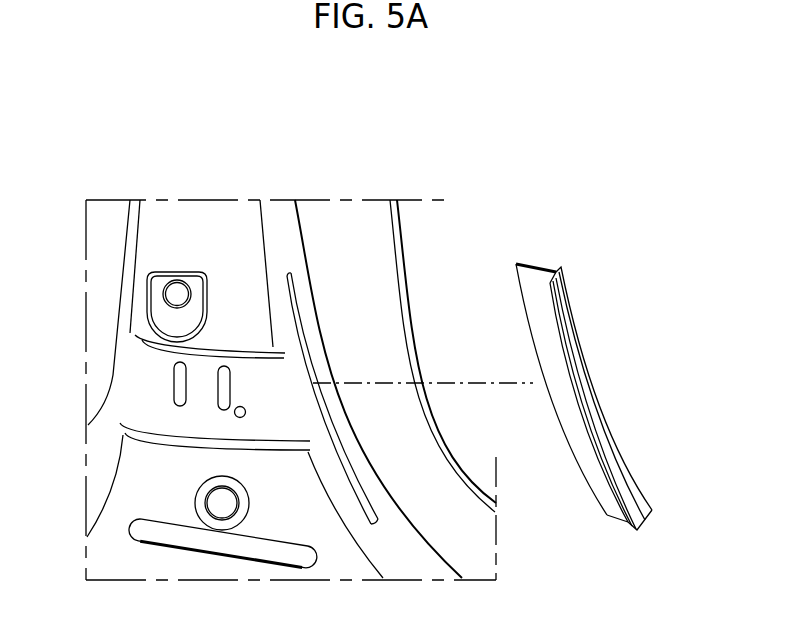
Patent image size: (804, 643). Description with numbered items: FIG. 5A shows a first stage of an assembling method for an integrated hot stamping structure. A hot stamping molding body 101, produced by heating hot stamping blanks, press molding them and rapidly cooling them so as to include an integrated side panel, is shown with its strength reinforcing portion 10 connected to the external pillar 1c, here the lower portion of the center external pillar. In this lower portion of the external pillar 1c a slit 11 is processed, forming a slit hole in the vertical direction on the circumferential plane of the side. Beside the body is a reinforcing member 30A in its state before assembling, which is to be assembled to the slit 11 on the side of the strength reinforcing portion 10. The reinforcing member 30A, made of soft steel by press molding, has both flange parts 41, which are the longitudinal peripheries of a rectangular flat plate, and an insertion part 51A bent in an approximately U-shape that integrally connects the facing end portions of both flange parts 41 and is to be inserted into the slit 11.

The strength reinforcing portion 10 is at (108, 366).
The hot stamping molding body 101 is at (199, 199).
The slit 11 is at (300, 322).
The external pillar 1c is at (407, 282).
The reinforcing member 30A is at (602, 397).
The flange parts 41 is at (623, 495).
The insertion part 51A is at (590, 467).